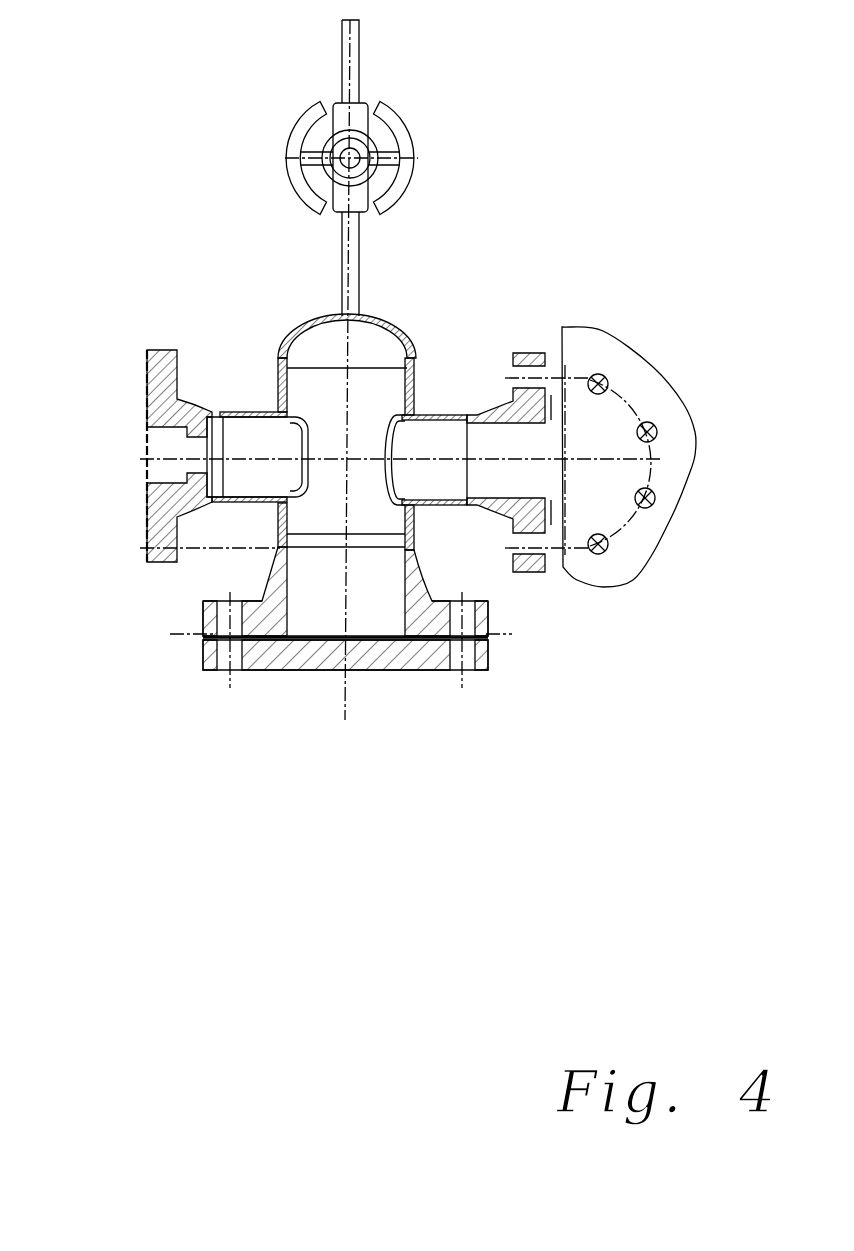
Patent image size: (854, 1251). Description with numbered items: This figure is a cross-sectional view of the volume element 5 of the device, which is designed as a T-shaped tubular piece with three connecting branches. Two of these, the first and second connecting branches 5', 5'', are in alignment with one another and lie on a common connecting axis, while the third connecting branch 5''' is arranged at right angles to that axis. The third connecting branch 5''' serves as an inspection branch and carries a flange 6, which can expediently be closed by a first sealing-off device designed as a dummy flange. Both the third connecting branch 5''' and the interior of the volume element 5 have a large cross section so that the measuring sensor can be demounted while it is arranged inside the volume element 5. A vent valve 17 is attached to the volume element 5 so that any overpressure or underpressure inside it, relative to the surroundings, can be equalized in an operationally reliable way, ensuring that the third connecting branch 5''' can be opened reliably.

The volume element 5 is at (345, 475).
The first connecting branch 5' is at (178, 456).
The second connecting branch 5'' is at (540, 457).
The third connecting branch 5''' is at (345, 663).
The flange 6 is at (352, 663).
The vent valve 17 is at (403, 153).